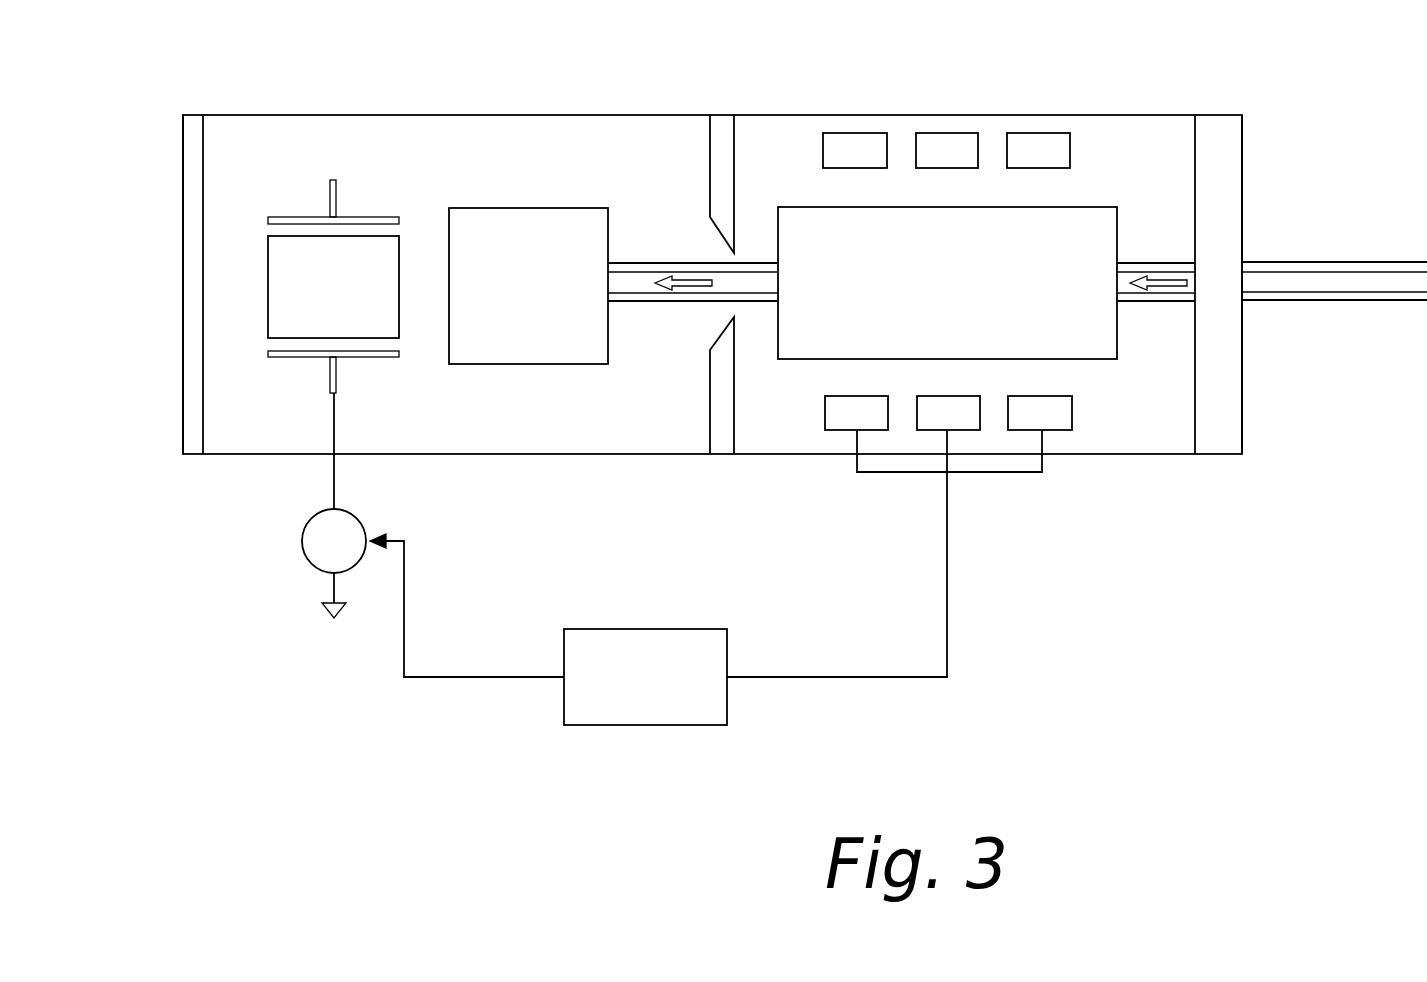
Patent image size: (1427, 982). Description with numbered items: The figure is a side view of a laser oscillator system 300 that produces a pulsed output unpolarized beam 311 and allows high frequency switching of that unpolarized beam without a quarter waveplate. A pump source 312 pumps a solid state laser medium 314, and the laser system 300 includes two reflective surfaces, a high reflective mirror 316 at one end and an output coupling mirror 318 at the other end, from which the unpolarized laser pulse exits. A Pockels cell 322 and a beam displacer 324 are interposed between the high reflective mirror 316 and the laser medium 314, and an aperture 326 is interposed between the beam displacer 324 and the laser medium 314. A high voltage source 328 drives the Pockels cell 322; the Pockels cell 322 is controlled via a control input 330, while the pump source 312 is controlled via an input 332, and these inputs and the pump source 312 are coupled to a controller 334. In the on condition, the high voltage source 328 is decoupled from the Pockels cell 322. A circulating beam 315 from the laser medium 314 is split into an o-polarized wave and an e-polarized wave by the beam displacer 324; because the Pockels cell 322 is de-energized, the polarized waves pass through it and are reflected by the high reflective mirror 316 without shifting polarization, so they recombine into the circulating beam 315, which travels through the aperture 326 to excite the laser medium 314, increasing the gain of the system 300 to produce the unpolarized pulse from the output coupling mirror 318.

The laser oscillator system 300 is at (638, 115).
The pulsed output unpolarized beam 311 is at (1362, 262).
The pump source 312 is at (938, 133).
The solid state laser medium 314 is at (1097, 350).
The circulating beam 315 is at (662, 263).
The high reflective mirror 316 is at (183, 212).
The output coupling mirror 318 is at (1245, 365).
The Pockels cell 322 is at (374, 236).
The beam displacer 324 is at (568, 208).
The aperture 326 is at (712, 412).
The high voltage source 328 is at (302, 540).
The control input 330 is at (463, 680).
The input 332 is at (835, 680).
The controller 334 is at (631, 727).